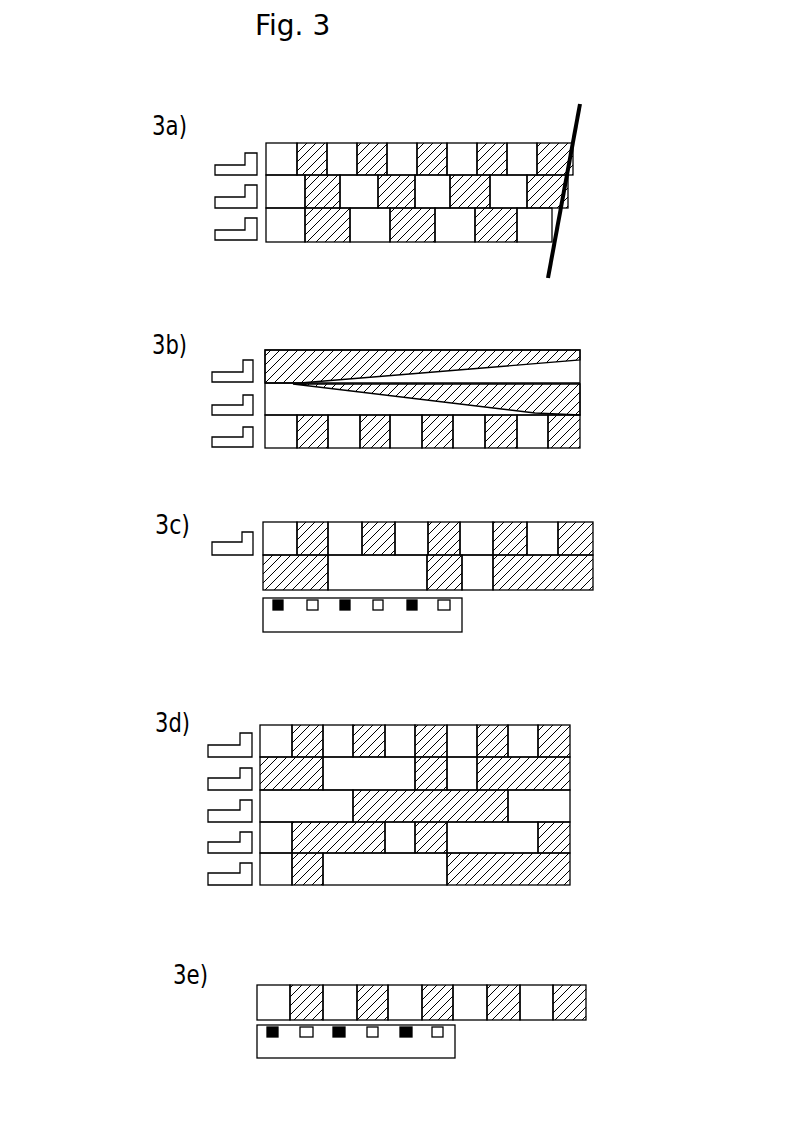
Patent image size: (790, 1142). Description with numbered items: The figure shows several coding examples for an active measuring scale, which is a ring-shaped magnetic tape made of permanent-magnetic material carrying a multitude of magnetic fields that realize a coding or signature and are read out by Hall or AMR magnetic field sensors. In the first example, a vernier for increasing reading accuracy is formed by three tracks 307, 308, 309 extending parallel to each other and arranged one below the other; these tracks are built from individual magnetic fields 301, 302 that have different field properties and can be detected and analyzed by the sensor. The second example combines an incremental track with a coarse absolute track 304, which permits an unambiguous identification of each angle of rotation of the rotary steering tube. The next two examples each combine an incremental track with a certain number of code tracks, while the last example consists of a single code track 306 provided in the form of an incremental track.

The magnetic field 301 is at (347, 160).
The magnetic field 302 is at (380, 147).
The coarse absolute track 304 is at (581, 385).
The code track 306 is at (587, 1000).
The track 307 is at (574, 155).
The track 308 is at (569, 190).
The track 309 is at (543, 227).